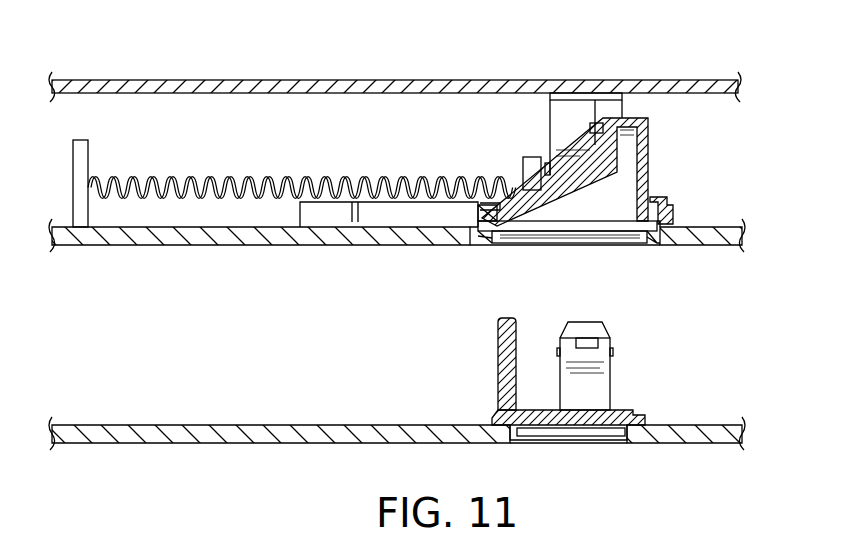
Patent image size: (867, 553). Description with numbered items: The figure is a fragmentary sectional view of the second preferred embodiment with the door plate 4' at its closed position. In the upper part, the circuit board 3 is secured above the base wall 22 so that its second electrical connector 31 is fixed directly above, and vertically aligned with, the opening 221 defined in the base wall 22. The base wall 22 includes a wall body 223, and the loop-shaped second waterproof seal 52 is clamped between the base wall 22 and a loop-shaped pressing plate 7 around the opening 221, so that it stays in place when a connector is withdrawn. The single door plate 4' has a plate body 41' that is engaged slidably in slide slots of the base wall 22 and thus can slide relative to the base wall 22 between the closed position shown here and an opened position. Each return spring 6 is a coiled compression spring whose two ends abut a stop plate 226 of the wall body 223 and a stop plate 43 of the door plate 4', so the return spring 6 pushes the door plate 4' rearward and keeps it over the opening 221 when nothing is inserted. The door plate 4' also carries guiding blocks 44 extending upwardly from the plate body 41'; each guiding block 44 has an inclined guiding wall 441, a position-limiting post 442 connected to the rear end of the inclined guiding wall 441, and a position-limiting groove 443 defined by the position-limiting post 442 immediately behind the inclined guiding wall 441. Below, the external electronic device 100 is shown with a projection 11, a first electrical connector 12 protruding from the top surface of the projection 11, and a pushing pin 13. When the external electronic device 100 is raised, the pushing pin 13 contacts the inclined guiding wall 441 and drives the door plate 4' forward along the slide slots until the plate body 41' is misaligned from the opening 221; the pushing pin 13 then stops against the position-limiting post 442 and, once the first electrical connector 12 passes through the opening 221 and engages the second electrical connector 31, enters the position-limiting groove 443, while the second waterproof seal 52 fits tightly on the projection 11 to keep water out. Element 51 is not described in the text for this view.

The circuit board 3 is at (718, 80).
The base wall 22 is at (718, 218).
The stop plate 226 is at (84, 158).
The return spring 6 is at (238, 172).
The stop plate 43 is at (527, 160).
The second electrical connector 31 is at (615, 106).
The guiding block 44 is at (578, 145).
The inclined guiding wall 441 is at (545, 168).
The position-limiting post 442 is at (598, 123).
The door plate 4' is at (603, 117).
The position-limiting groove 443 is at (642, 147).
The plate body 41' is at (689, 192).
The pressing plate 7 is at (478, 234).
The second waterproof seal 52 is at (495, 236).
The left seat 51 is at (470, 232).
The opening 221 is at (662, 236).
The wall body 223 is at (705, 237).
The external electronic device 100 is at (694, 414).
The pushing pin 13 is at (498, 365).
The projection 11 is at (492, 418).
The first electrical connector 12 is at (612, 375).